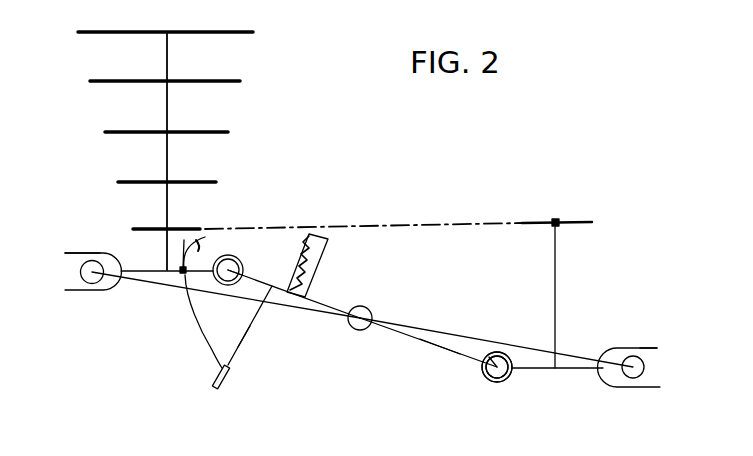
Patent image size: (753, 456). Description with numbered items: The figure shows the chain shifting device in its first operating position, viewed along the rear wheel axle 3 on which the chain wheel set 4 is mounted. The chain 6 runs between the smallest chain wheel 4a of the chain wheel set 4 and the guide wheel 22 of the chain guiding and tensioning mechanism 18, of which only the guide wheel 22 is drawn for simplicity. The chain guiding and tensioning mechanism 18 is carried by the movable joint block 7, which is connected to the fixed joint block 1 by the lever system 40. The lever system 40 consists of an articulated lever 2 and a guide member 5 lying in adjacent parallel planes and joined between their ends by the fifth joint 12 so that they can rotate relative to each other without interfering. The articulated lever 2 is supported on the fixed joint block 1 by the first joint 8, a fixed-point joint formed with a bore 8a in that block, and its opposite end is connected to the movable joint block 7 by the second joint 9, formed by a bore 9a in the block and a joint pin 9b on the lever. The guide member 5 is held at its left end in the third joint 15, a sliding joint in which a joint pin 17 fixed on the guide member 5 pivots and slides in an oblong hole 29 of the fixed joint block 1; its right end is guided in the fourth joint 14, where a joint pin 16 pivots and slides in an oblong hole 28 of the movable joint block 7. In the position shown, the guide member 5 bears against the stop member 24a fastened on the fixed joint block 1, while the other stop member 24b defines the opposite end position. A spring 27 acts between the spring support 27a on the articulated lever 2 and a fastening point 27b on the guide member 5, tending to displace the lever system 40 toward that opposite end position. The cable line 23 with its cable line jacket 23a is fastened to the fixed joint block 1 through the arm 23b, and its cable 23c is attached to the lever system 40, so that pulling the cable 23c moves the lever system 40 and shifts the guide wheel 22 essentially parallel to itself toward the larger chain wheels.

The fixed joint block 1 is at (150, 268).
The articulated lever 2 is at (395, 332).
The rear wheel axle 3 is at (167, 162).
The chain wheel set 4 is at (240, 110).
The smallest chain wheel 4a is at (184, 240).
The guide member 5 is at (463, 336).
The chain 6 is at (411, 223).
The movable joint block 7 is at (528, 372).
The first joint 8 is at (243, 264).
The bore 8a is at (238, 285).
The second joint 9 is at (484, 380).
The bore 9a is at (505, 383).
The joint pin 9b is at (505, 352).
The fifth joint 12 is at (372, 308).
The fourth joint 14 is at (658, 377).
The third joint 15 is at (84, 296).
The joint pin 16 is at (630, 375).
The joint pin 17 is at (97, 284).
The chain guiding and tensioning mechanism 18 is at (562, 276).
The guide wheel 22 is at (563, 218).
The cable line 23 is at (210, 385).
The cable line jacket 23a is at (226, 386).
The arm 23b is at (207, 343).
The cable 23c is at (246, 336).
The stop member 24a is at (182, 277).
The stop member 24b is at (199, 247).
The spring 27 is at (302, 236).
The spring support 27a is at (316, 274).
The fastening point 27b is at (290, 305).
The oblong hole 28 is at (647, 352).
The oblong hole 29 is at (70, 253).
The lever system 40 is at (432, 354).